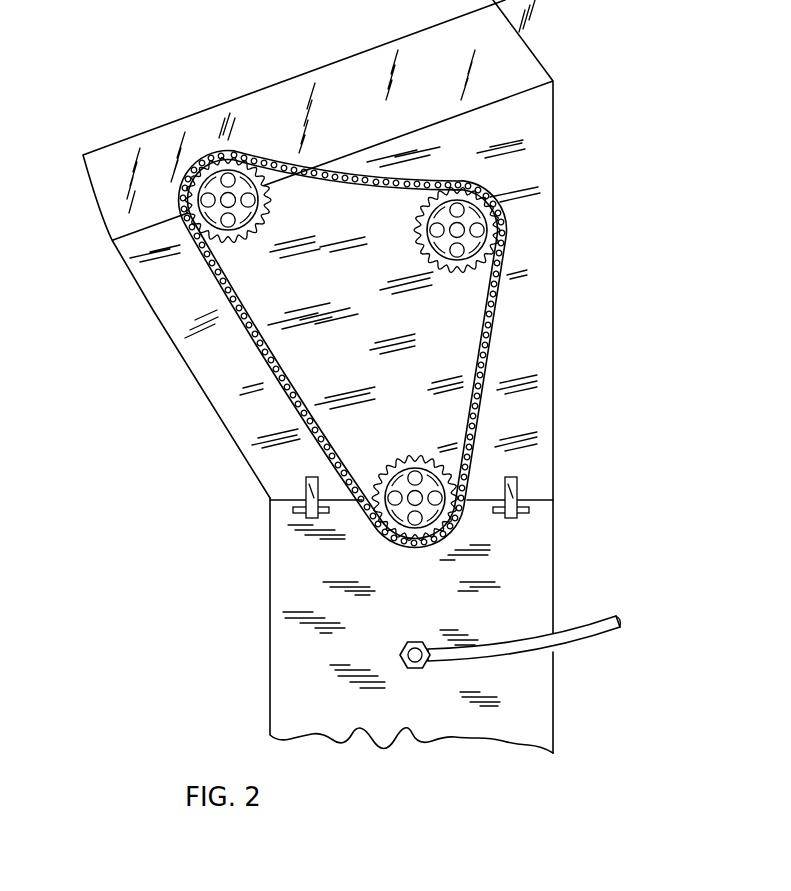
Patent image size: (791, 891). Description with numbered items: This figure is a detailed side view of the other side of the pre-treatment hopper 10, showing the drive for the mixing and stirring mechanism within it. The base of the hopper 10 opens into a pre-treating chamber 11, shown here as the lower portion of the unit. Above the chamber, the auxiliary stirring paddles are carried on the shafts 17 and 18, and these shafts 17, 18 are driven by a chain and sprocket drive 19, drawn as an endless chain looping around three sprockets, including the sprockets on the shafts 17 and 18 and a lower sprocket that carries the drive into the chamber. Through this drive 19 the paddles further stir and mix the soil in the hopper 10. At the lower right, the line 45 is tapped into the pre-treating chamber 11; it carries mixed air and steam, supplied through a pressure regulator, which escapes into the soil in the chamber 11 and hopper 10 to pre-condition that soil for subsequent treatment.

The hopper 10 is at (125, 230).
The pre-treating chamber 11 is at (285, 563).
The shaft 17 is at (203, 258).
The shaft 18 is at (490, 240).
The chain and sprocket drive 19 is at (500, 325).
The line 45 is at (590, 632).